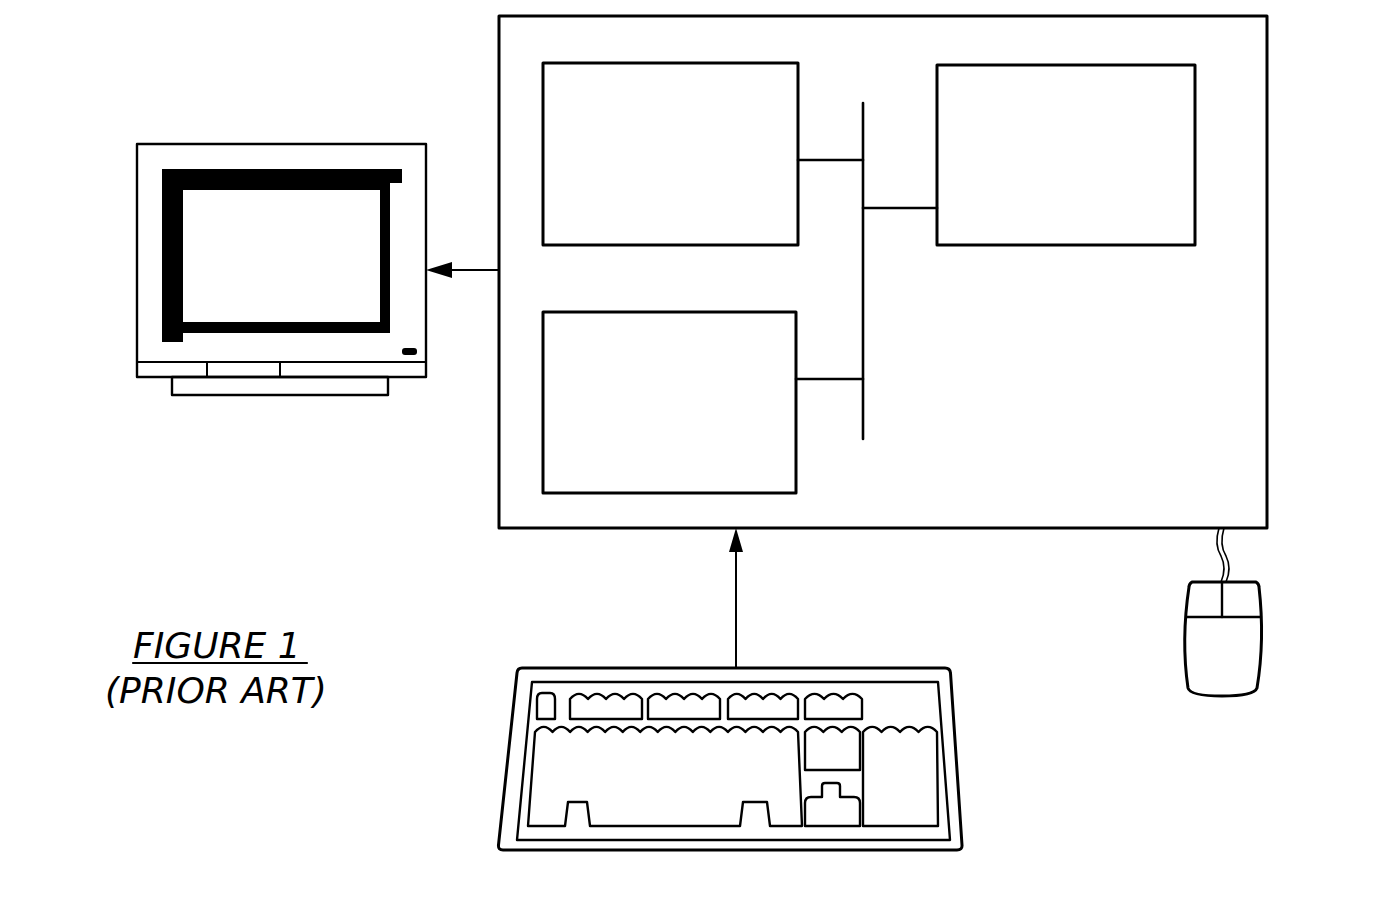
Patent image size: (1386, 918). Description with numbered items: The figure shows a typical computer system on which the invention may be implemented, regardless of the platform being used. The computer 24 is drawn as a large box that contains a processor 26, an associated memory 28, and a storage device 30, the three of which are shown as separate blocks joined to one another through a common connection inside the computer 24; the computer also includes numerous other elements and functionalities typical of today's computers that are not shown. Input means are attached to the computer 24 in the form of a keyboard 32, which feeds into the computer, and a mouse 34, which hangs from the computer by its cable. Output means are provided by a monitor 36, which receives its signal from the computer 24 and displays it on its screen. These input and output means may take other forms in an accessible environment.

The computer 24 is at (1274, 361).
The processor 26 is at (1065, 173).
The memory 28 is at (652, 171).
The storage device 30 is at (645, 420).
The keyboard 32 is at (626, 788).
The mouse 34 is at (1204, 665).
The monitor 36 is at (256, 242).